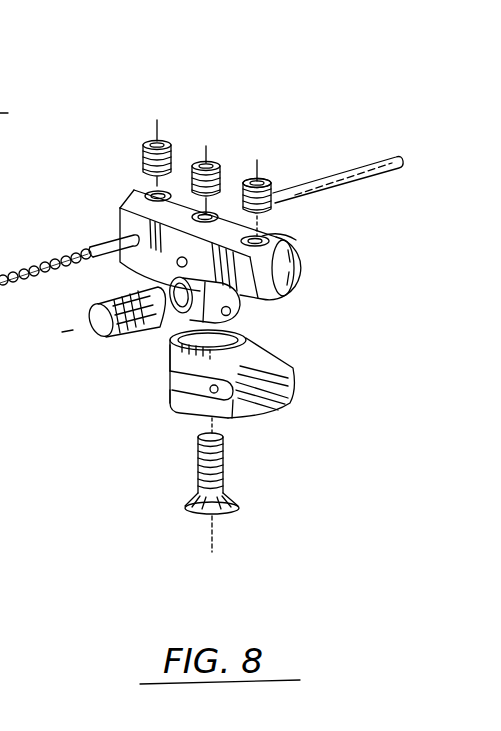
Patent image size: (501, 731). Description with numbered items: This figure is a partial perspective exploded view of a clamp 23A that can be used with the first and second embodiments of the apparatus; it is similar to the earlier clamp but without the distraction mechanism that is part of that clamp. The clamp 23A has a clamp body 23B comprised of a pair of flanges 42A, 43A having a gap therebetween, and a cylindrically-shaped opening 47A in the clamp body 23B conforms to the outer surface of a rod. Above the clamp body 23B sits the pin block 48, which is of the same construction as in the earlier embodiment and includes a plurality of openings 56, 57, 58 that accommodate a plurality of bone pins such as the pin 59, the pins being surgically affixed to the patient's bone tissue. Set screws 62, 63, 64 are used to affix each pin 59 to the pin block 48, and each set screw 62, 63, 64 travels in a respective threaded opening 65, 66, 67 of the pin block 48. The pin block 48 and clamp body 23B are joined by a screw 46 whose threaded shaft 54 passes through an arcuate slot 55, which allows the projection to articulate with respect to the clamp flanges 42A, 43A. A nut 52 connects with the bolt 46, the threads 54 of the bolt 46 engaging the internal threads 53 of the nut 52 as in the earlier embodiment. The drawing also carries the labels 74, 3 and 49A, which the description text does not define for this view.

The bar 74 is at (0, 35).
The partial reference 3 is at (5, 424).
The clamp 23A is at (290, 88).
The set screw 62 is at (148, 140).
The set screw 63 is at (197, 164).
The set screw 64 is at (258, 160).
The threaded opening 66 is at (248, 178).
The bone pin 59 is at (372, 163).
The pin block 48 is at (290, 260).
The threaded opening 65 is at (128, 188).
The threaded opening 67 is at (277, 227).
The opening 58 is at (293, 279).
The opening 57 is at (177, 263).
The opening 56 is at (114, 225).
The nut 52 is at (90, 318).
The internal threads 53 is at (119, 287).
The arcuate slot 55 is at (262, 305).
The lug 49A is at (228, 340).
The clamp body 23B is at (299, 380).
The cylindrically-shaped opening 47A is at (246, 434).
The flange 42A is at (175, 362).
The flange 43A is at (190, 397).
The threaded shaft 54 is at (178, 323).
The screw 46 is at (234, 495).